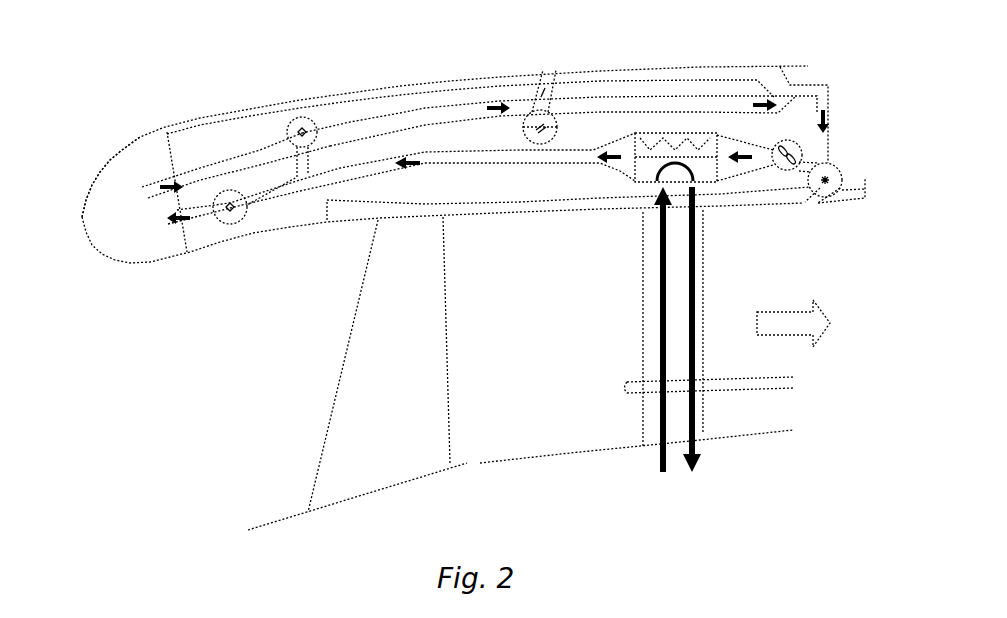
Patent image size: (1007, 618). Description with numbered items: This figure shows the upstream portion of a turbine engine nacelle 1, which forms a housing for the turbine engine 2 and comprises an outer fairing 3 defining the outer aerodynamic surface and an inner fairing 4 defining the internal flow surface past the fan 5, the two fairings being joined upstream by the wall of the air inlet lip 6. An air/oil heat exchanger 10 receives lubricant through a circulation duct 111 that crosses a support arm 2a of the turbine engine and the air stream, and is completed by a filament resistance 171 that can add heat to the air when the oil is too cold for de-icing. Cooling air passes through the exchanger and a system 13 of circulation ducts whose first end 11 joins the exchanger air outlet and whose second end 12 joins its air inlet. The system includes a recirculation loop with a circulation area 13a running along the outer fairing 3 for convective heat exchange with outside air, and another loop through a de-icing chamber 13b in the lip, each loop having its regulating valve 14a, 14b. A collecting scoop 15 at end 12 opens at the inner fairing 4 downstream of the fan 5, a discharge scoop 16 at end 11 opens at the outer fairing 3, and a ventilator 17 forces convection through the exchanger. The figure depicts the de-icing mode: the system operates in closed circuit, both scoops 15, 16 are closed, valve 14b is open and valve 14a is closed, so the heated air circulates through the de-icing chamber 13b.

The nacelle 1 is at (774, 46).
The turbine engine 2 is at (738, 461).
The support arm 2a is at (683, 256).
The outer fairing 3 is at (393, 85).
The inner fairing 4 is at (287, 226).
The fan 5 is at (427, 342).
The air inlet lip 6 is at (107, 170).
The heat exchanger 10 is at (660, 145).
The first end 11 is at (620, 170).
The second end 12 is at (733, 163).
The system of circulation ducts 13 is at (456, 82).
The circulation area 13a is at (603, 77).
The de-icing chamber 13b is at (148, 157).
The regulating valve 14a is at (290, 128).
The regulating valve 14b is at (234, 220).
The scoop 15 is at (837, 176).
The discharge scoop 16 is at (547, 87).
The ventilator 17 is at (793, 143).
The circulation duct 111 is at (697, 295).
The filament resistance 171 is at (700, 145).